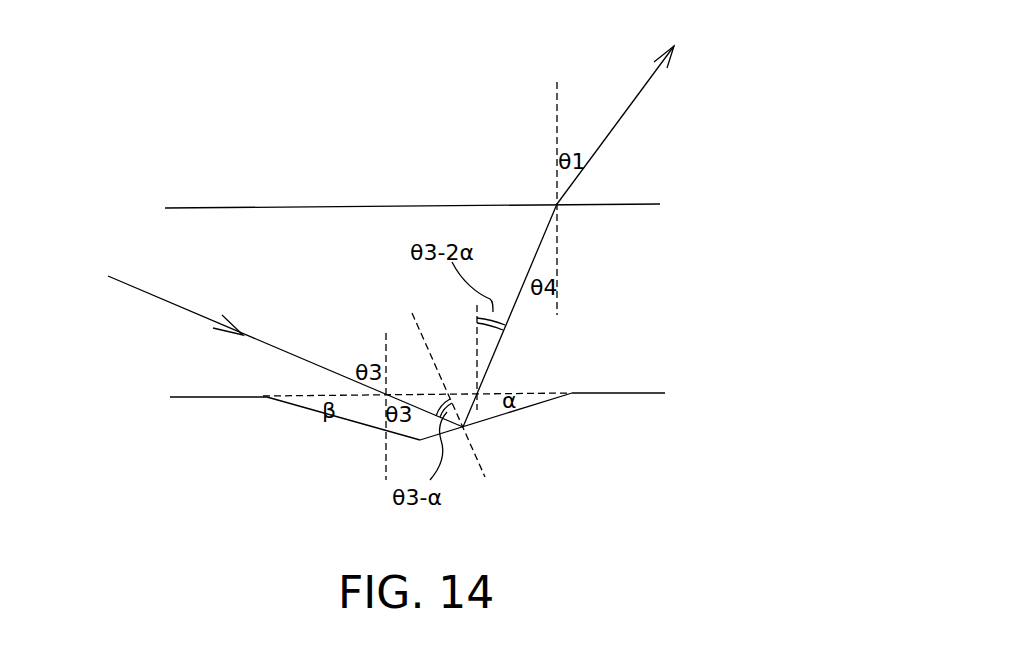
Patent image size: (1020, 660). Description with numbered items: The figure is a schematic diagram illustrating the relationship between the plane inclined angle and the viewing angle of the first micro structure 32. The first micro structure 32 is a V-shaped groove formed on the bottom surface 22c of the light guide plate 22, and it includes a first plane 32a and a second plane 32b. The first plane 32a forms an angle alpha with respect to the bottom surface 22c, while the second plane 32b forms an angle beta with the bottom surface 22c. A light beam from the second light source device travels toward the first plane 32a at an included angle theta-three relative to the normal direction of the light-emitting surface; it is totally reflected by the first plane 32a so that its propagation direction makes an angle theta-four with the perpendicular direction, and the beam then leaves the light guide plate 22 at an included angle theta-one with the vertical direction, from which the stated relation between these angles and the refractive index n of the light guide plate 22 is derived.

The light guide plate 22 is at (275, 205).
The bottom surface 22c is at (620, 393).
The first micro structure 32 is at (431, 439).
The first plane 32a is at (487, 420).
The second plane 32b is at (340, 418).